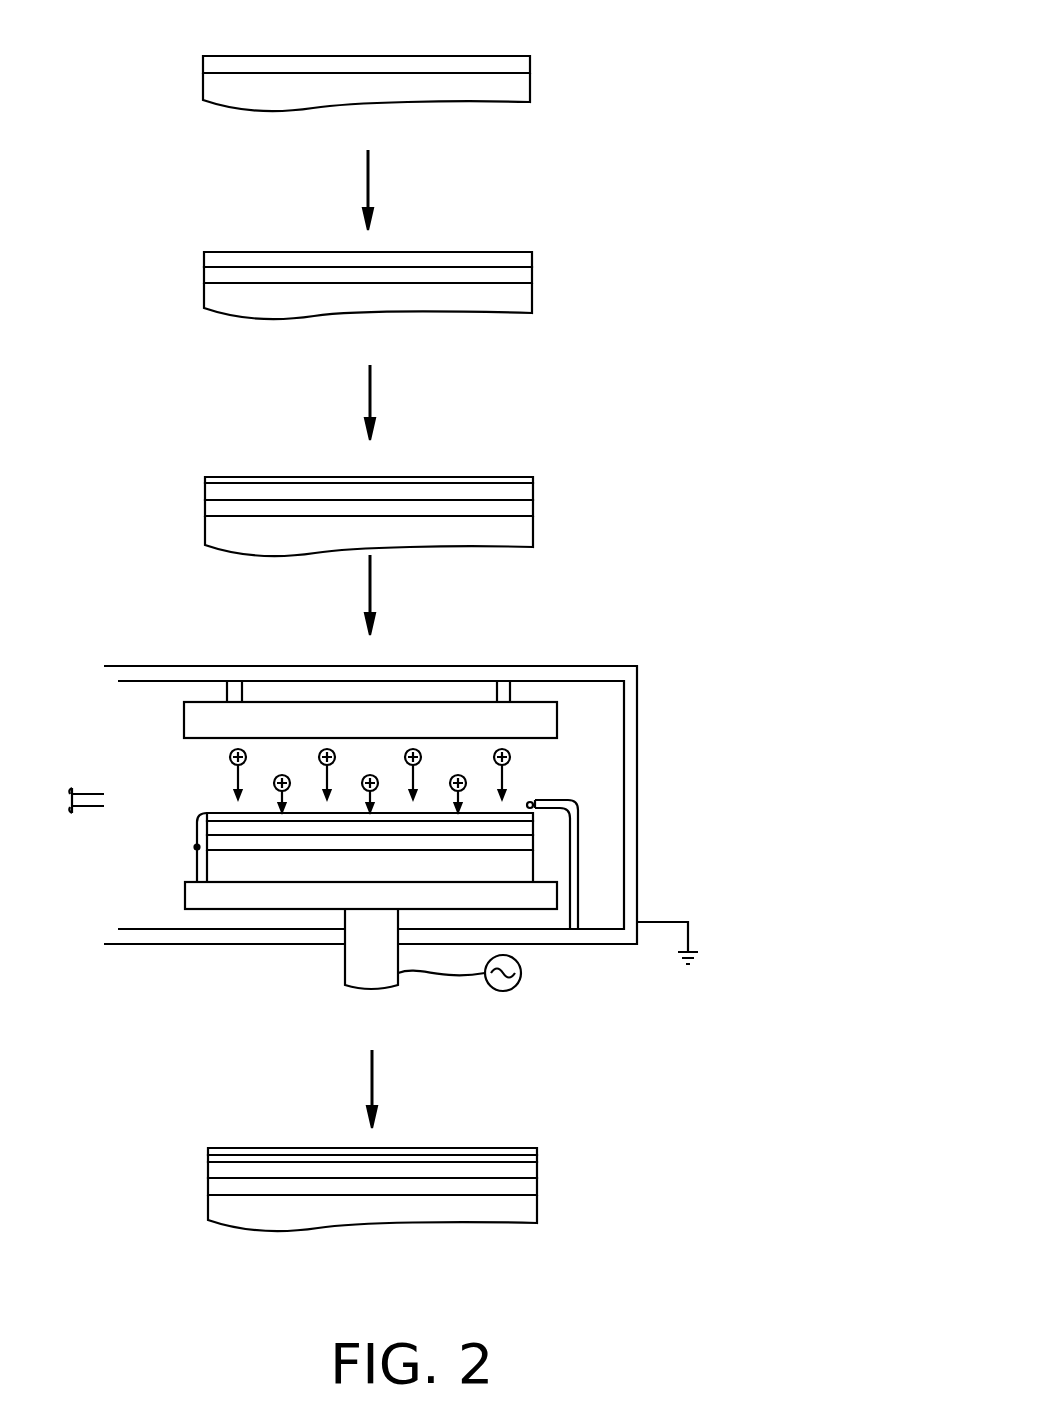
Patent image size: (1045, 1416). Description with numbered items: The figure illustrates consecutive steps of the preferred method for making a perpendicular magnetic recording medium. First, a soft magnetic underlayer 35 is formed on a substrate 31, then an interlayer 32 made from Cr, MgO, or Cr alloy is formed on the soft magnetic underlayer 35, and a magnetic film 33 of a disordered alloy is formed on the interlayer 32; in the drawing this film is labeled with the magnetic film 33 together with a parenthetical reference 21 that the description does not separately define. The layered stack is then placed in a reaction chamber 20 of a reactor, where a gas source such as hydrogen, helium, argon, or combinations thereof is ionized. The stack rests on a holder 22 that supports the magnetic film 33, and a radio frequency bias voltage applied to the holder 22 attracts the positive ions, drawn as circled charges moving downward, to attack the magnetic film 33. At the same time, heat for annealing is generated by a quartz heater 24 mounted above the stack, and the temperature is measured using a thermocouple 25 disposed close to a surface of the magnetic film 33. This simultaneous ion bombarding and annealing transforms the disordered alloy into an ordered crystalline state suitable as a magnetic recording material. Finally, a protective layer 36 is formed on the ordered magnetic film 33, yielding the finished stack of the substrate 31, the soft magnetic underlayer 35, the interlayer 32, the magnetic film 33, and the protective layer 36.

The reaction chamber 20 is at (630, 680).
The workpiece / surface to be treated 21 is at (486, 804).
The holder 22 is at (542, 905).
The quartz heater 24 is at (543, 722).
The thermocouple 25 is at (533, 807).
The substrate 31 is at (527, 98).
The interlayer 32 is at (510, 257).
The magnetic film 33 is at (515, 477).
The soft magnetic underlayer 35 is at (527, 63).
The protective layer 36 is at (515, 1148).